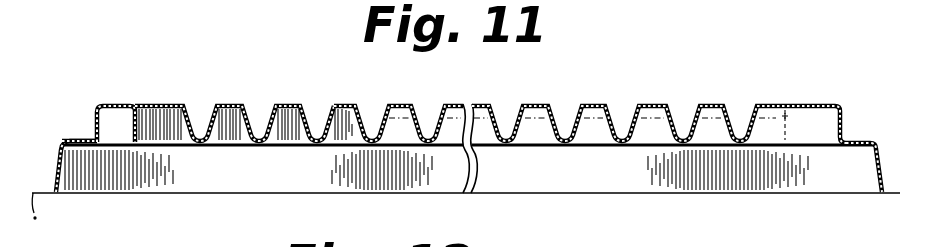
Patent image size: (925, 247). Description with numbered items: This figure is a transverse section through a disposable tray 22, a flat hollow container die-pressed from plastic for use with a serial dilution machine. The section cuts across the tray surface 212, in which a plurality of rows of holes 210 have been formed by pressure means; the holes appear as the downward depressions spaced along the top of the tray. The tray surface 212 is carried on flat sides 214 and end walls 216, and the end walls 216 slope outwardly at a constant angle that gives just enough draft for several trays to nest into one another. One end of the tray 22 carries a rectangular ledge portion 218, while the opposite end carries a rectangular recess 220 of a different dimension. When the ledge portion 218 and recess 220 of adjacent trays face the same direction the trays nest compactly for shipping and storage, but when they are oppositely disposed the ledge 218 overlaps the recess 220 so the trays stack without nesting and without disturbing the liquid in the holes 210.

The disposable tray 22 is at (672, 97).
The holes 210 is at (312, 104).
The tray surface 212 is at (115, 103).
The flat sides 214 is at (593, 185).
The end walls 216 is at (56, 173).
The rectangular ledge portion 218 is at (818, 105).
The rectangular recess 220 is at (122, 137).